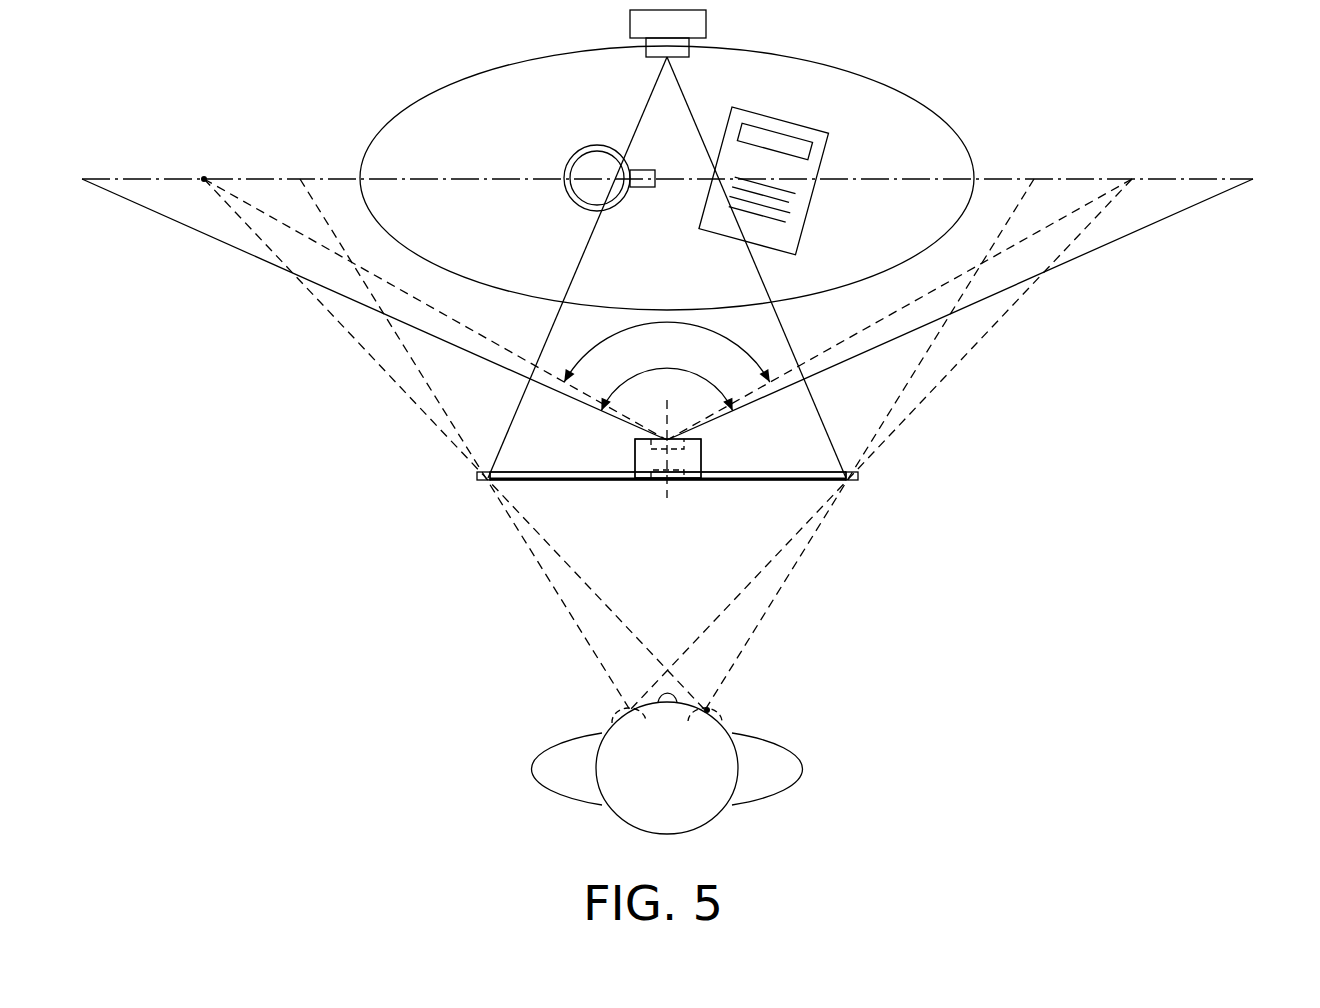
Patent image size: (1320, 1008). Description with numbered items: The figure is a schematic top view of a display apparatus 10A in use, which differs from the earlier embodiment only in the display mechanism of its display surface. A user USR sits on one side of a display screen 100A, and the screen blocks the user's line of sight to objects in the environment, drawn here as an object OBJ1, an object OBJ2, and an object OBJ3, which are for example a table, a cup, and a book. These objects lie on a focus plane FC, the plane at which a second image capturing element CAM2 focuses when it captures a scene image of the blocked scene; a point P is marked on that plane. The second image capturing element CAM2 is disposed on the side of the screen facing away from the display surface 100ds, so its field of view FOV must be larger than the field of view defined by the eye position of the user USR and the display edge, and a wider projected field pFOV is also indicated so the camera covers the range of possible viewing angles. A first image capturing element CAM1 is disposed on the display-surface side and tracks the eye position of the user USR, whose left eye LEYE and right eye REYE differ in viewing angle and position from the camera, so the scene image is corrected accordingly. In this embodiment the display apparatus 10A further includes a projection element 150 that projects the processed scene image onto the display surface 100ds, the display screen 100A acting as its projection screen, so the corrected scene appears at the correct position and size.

The projection element 150 is at (695, 26).
The focus plane FC is at (150, 177).
The point on focal plane P is at (205, 177).
The object OBJ1 is at (412, 128).
The object OBJ2 is at (573, 157).
The object OBJ3 is at (805, 143).
The projected field of view pFOV is at (636, 326).
The field of view FOV is at (666, 374).
The first image capturing element CAM1 is at (651, 470).
The second image capturing element CAM2 is at (684, 441).
The display screen 100A is at (477, 477).
The display surface 100ds is at (532, 486).
The display apparatus 10A is at (270, 447).
The user USR is at (575, 755).
The left eye LEYE is at (646, 720).
The right eye REYE is at (700, 722).